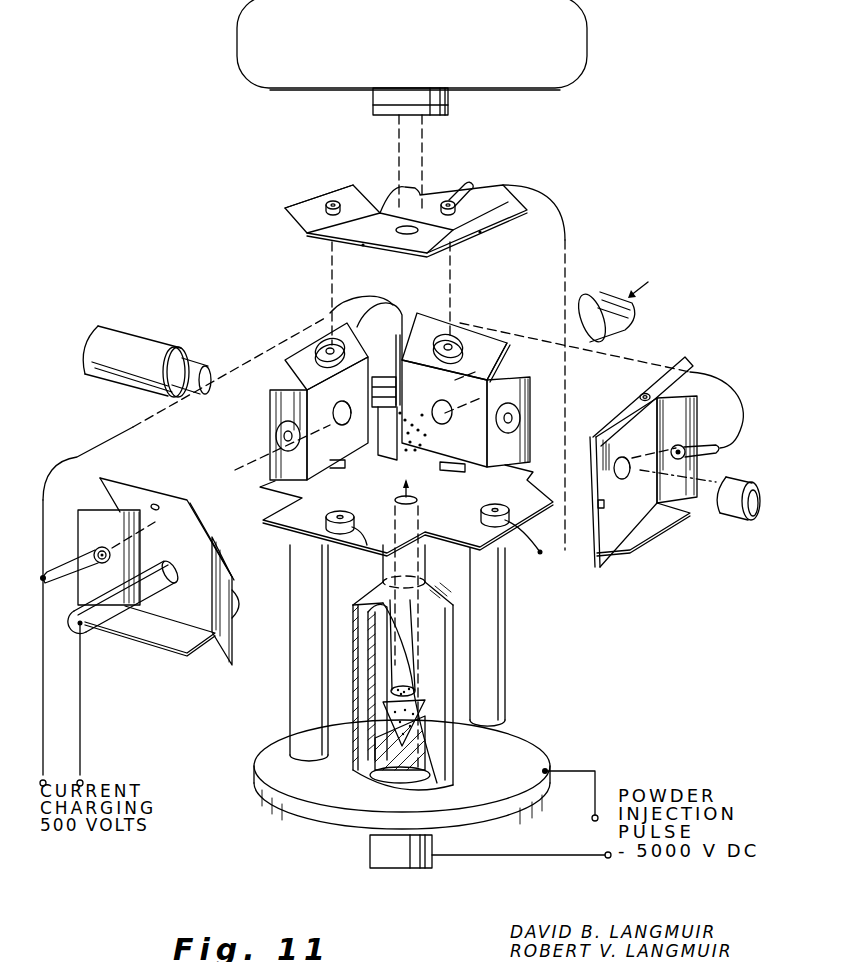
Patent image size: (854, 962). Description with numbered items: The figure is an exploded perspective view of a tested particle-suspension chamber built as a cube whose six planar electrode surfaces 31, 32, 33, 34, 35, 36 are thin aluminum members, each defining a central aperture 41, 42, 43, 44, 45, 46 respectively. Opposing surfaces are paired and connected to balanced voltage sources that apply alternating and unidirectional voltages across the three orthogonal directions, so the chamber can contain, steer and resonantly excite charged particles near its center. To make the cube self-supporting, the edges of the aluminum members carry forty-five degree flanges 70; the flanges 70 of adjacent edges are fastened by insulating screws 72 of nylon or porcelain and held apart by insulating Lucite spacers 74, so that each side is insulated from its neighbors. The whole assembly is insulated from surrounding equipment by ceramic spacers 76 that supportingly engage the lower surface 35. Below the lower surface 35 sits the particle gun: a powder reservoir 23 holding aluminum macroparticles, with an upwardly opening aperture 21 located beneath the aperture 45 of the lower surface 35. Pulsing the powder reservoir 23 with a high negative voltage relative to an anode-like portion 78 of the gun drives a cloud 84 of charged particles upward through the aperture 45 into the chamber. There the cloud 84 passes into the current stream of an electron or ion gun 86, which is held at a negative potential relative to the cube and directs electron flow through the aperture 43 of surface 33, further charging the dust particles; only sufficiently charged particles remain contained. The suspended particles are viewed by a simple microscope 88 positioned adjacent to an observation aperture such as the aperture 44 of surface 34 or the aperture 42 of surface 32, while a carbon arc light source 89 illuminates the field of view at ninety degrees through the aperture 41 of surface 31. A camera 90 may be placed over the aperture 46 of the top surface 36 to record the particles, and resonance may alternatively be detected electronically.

The camera 90 is at (257, 80).
The insulating screws 72 is at (333, 200).
The central aperture 46 is at (411, 226).
The flanges 70 is at (300, 218).
The planar electrode surface 36 is at (397, 250).
The microscope 88 is at (118, 330).
The planar electrode surface 34 is at (300, 345).
The insulating washers 74 is at (280, 436).
The planar electrode surface 31 is at (500, 334).
The central aperture 41 is at (436, 402).
The central aperture 44 is at (345, 426).
The cloud of charged particles 84 is at (403, 458).
The central aperture 45 is at (418, 499).
The lower electrode surface 35 is at (276, 498).
The carbon arc light source 89 is at (642, 312).
The planar electrode surface 32 is at (600, 420).
The central aperture 42 is at (621, 457).
The planar electrode surface 33 is at (146, 488).
The central aperture 43 is at (172, 563).
The electron or ion gun 86 is at (156, 596).
The ceramic spacers 76 is at (290, 692).
The anode-like portion 78 is at (355, 630).
The upwardly opening aperture 21 is at (372, 656).
The powder reservoir 23 is at (392, 720).